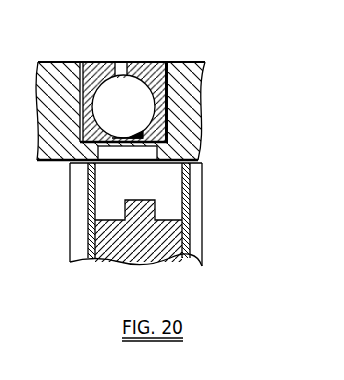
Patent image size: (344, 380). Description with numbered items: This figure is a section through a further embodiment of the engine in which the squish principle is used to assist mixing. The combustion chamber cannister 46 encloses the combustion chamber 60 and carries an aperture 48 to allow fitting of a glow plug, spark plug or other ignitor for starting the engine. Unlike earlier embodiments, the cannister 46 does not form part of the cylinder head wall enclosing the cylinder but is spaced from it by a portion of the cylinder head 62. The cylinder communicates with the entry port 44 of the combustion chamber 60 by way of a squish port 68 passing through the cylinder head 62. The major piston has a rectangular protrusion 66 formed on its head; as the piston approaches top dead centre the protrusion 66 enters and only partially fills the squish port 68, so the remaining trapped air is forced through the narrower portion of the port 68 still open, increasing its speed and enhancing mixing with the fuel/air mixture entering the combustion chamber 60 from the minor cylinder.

The entry port 44 is at (145, 132).
The combustion chamber cannister 46 is at (155, 77).
The aperture 48 is at (121, 62).
The combustion chamber 60 is at (107, 97).
The cylinder head 62 is at (180, 87).
The rectangular protrusion 66 is at (157, 208).
The squish port 68 is at (140, 151).